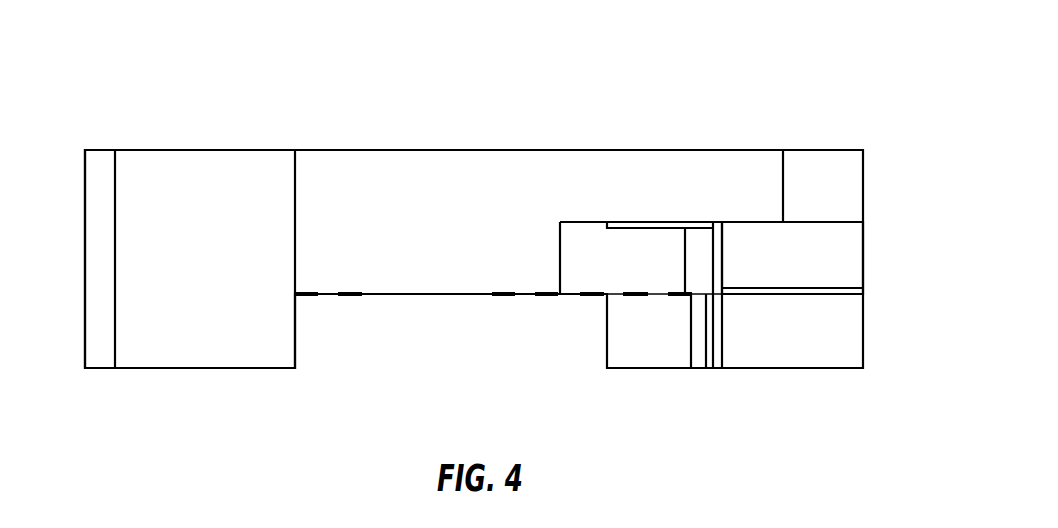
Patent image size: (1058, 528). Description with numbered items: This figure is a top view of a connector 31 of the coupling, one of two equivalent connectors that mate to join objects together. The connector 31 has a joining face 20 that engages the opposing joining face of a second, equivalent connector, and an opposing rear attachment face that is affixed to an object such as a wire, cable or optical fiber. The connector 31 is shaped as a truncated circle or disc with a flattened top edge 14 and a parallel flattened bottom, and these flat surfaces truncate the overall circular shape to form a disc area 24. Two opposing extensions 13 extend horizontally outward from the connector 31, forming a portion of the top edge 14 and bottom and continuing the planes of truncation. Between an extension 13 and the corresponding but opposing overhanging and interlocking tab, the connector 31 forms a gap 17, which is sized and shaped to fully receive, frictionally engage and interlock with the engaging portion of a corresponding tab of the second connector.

The first connector 31 is at (856, 104).
The top edge 14 is at (177, 197).
The disc area 24 is at (381, 150).
The extension 13 is at (640, 150).
The gap 17 is at (837, 255).
The joining face 20 is at (422, 294).